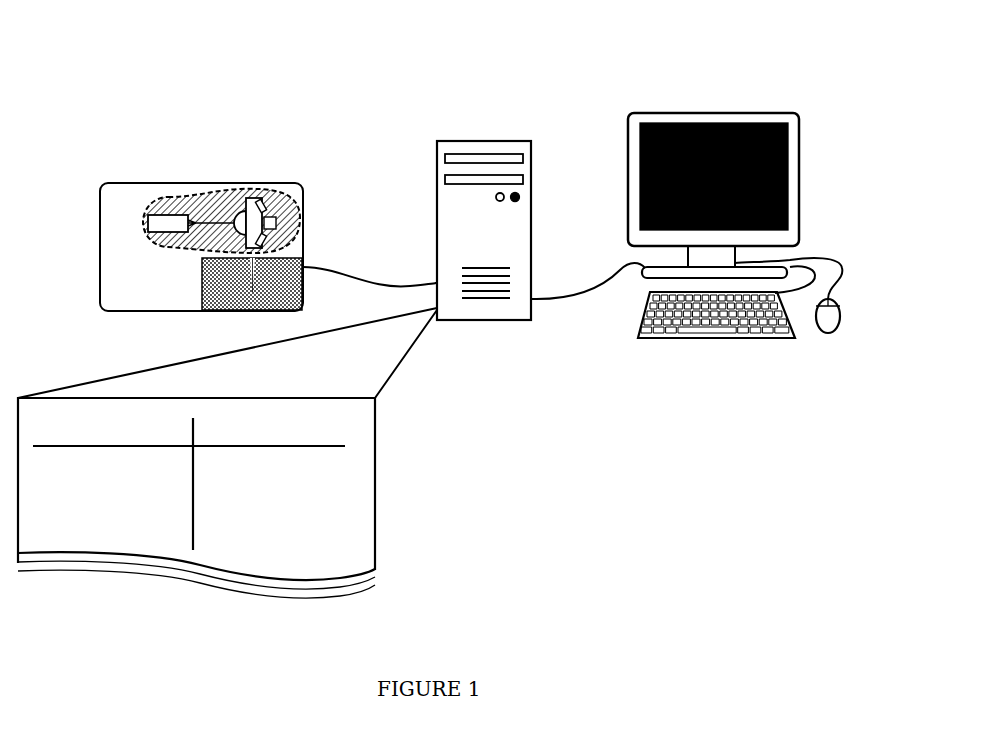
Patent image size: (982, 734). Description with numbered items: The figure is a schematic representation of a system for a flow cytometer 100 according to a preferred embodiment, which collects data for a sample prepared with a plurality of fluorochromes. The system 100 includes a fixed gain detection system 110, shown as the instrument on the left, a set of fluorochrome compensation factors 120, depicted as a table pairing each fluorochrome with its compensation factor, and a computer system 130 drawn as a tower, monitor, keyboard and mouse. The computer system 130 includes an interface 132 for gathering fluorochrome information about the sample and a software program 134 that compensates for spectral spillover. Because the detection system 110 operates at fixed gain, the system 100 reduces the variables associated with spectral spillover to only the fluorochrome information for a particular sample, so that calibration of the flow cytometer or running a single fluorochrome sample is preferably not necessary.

The system for a flow cytometer 100 is at (162, 60).
The fixed gain detection system 110 is at (226, 200).
The fluorochrome compensation factors 120 is at (428, 516).
The computer system 130 is at (548, 86).
The interface 132 is at (840, 353).
The software program 134 is at (528, 345).